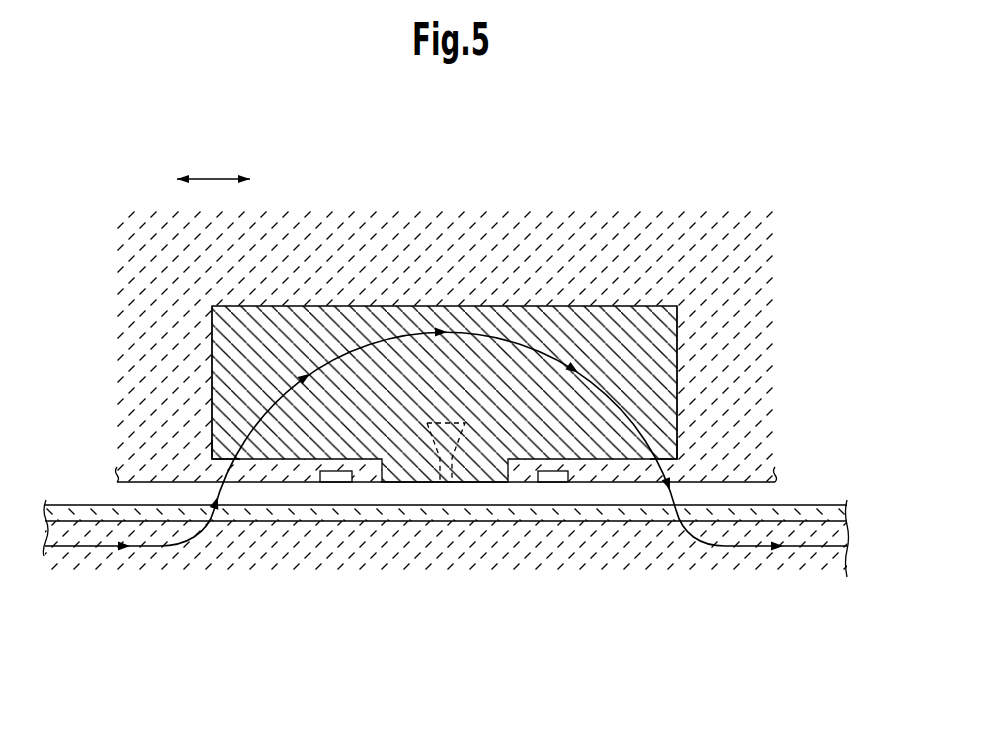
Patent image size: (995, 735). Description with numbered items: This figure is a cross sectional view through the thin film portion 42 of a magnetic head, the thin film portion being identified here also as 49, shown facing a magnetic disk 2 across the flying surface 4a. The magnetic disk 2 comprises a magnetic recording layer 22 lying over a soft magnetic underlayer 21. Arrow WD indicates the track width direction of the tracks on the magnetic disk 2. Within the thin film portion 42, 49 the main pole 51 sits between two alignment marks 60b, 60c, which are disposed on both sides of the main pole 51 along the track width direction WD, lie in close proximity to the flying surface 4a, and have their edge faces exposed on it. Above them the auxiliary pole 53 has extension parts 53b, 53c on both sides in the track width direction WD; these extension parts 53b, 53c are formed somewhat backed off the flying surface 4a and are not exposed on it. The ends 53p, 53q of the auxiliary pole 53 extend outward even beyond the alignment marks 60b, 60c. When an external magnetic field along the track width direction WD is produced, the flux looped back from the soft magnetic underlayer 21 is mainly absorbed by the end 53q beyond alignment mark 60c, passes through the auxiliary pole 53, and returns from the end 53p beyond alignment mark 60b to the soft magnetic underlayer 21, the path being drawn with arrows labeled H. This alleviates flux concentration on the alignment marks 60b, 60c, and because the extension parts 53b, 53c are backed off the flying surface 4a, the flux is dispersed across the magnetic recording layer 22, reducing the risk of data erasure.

The magnetic disk 2 is at (445, 556).
The flying surface 4a is at (762, 487).
The soft magnetic underlayer 21 is at (80, 563).
The magnetic recording layer 22 is at (77, 505).
The thin film portion 42 is at (465, 208).
The thin film portion 49 is at (445, 312).
The main pole 51 is at (452, 420).
The auxiliary pole 53 is at (445, 364).
The extension part 53b is at (663, 350).
The extension part 53c is at (230, 350).
The end of auxiliary pole 53p is at (677, 438).
The end of auxiliary pole 53q is at (212, 438).
The alignment mark 60b is at (552, 471).
The alignment mark 60c is at (337, 471).
The magnetic flux path H is at (807, 547).
The track width direction WD is at (214, 177).